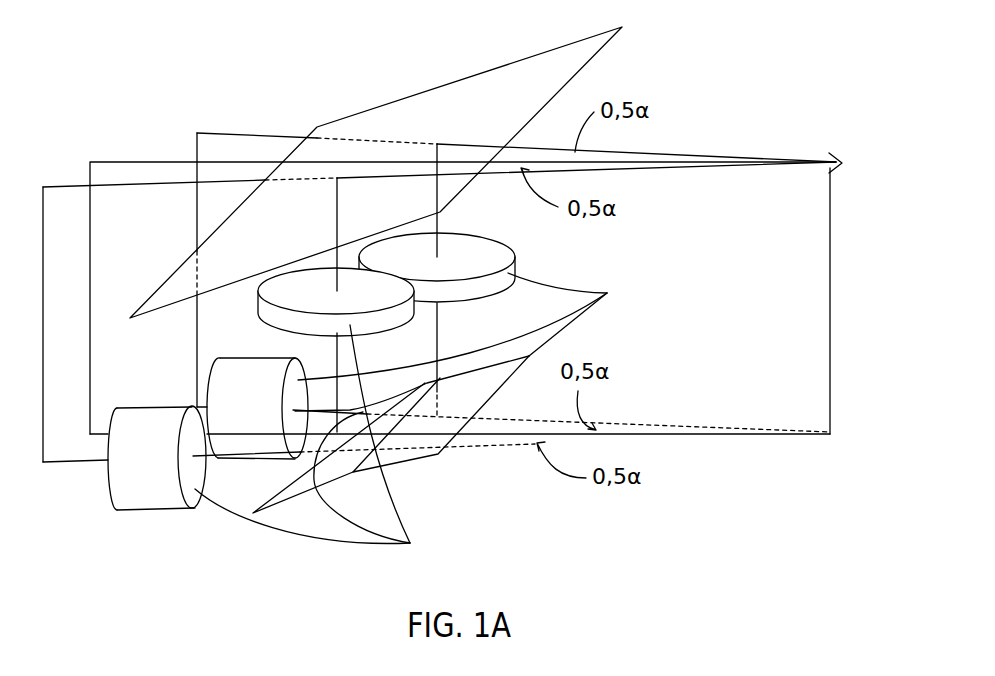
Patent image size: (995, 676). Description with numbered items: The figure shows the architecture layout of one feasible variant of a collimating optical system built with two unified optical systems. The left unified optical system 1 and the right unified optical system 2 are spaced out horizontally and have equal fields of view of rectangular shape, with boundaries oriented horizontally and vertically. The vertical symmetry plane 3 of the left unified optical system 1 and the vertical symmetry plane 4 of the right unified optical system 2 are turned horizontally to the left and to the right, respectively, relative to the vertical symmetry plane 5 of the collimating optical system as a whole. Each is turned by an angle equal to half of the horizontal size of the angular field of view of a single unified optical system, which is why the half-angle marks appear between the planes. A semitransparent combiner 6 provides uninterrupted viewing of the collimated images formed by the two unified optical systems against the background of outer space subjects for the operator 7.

The left unified optical system 1 is at (412, 543).
The right unified optical system 2 is at (609, 293).
The vertical symmetry plane of the left unified optical system 3 is at (67, 237).
The vertical symmetry plane of the right unified optical system 4 is at (218, 145).
The vertical symmetry plane of the collimating optical system 5 is at (163, 168).
The semitransparent combiner 6 is at (578, 72).
The operator 7 is at (830, 159).